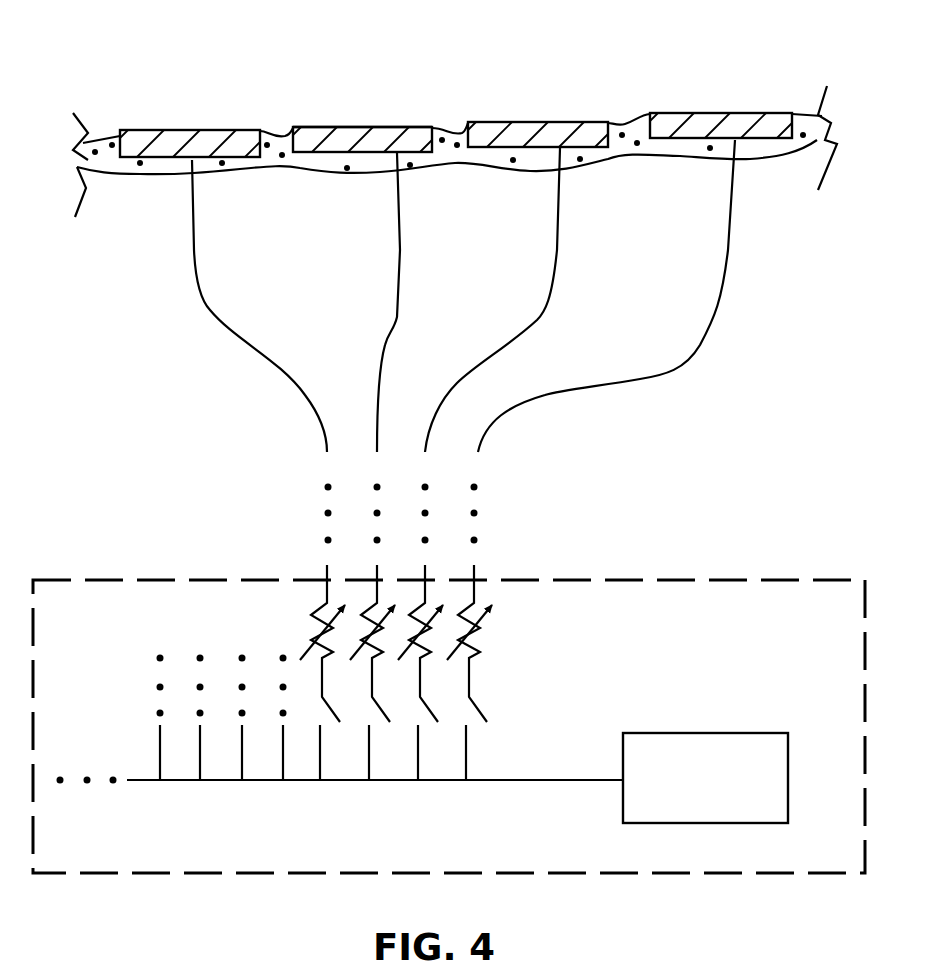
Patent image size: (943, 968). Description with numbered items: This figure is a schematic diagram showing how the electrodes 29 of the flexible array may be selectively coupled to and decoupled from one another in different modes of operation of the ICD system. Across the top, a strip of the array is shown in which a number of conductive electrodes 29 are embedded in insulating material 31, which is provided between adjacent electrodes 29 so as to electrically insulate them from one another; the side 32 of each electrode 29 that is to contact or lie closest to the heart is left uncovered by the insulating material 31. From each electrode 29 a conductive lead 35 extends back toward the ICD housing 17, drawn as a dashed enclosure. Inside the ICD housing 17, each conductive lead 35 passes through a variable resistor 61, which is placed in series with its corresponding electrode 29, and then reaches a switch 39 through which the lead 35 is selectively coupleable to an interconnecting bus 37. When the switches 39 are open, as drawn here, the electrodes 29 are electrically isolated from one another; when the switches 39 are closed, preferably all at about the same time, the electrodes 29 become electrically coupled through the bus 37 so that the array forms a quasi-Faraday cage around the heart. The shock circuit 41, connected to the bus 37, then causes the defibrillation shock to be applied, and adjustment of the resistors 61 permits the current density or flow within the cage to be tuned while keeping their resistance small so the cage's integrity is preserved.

The ICD housing 17 is at (612, 580).
The electrodes 29 is at (200, 130).
The insulating material 31 is at (267, 140).
The side of electrode 32 is at (350, 127).
The conductive lead 35 is at (212, 310).
The interconnecting bus 37 is at (393, 782).
The switches 39 is at (480, 696).
The shock circuit 41 is at (622, 753).
The variable resistors 61 is at (305, 628).